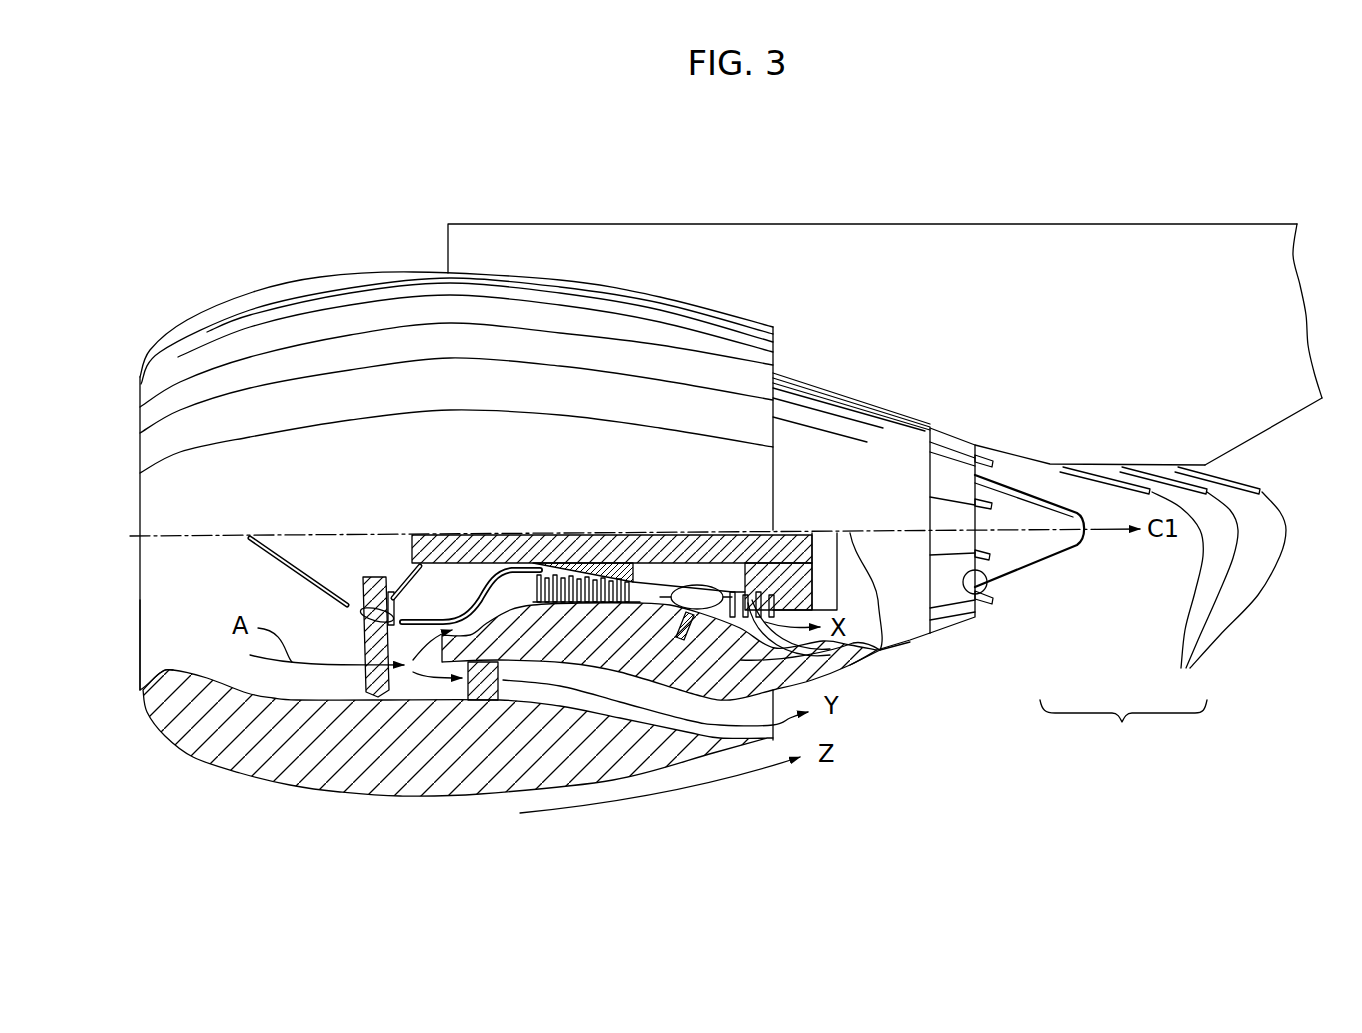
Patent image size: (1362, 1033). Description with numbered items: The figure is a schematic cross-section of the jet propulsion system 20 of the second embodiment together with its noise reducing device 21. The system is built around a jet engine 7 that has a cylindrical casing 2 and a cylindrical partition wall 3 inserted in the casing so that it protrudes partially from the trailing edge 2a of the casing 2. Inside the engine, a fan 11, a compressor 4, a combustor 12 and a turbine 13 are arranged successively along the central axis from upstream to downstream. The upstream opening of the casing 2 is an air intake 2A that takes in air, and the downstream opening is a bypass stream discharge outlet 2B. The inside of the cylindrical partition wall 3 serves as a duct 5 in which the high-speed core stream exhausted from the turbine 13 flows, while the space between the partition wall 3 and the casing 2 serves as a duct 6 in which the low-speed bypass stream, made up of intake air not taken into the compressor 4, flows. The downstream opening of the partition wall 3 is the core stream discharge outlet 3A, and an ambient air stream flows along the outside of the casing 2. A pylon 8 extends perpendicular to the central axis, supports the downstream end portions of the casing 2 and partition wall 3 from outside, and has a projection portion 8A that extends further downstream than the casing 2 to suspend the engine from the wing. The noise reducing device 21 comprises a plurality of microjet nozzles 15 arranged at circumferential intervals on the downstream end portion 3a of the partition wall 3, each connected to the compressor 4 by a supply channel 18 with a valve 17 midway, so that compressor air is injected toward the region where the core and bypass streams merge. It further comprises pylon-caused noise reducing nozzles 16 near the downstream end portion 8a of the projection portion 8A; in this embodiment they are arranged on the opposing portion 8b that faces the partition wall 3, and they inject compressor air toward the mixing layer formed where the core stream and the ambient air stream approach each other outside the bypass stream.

The jet propulsion system 20 is at (176, 291).
The casing 2 is at (292, 300).
The trailing edge 2a is at (773, 357).
The air intake 2A is at (141, 620).
The bypass stream discharge outlet 2B is at (780, 734).
The cylindrical partition wall 3 is at (832, 425).
The downstream end portion 3a is at (952, 438).
The core stream discharge outlet 3A is at (965, 594).
The compressor 4 is at (557, 574).
The duct 5 is at (500, 572).
The duct 6 is at (790, 686).
The jet engine 7 is at (300, 793).
The pylon 8 is at (653, 240).
The projection portion 8A is at (1175, 260).
The downstream end portion 8a is at (1287, 420).
The opposing portion 8b is at (1165, 462).
The fan 11 is at (378, 575).
The combustor 12 is at (703, 586).
The turbine 13 is at (757, 588).
The microjet nozzle 15 is at (985, 500).
The pylon-caused noise reducing nozzle 16 is at (1173, 584).
The valve 17 is at (660, 607).
The supply channel 18 is at (875, 652).
The noise reducing device 21 is at (1136, 750).